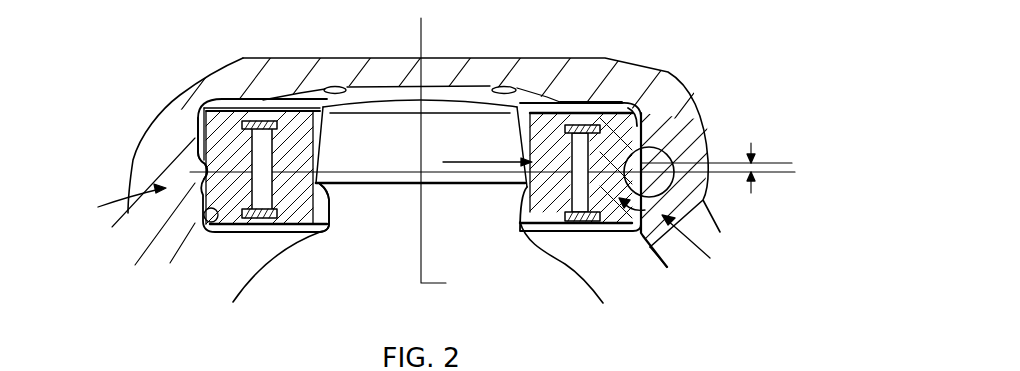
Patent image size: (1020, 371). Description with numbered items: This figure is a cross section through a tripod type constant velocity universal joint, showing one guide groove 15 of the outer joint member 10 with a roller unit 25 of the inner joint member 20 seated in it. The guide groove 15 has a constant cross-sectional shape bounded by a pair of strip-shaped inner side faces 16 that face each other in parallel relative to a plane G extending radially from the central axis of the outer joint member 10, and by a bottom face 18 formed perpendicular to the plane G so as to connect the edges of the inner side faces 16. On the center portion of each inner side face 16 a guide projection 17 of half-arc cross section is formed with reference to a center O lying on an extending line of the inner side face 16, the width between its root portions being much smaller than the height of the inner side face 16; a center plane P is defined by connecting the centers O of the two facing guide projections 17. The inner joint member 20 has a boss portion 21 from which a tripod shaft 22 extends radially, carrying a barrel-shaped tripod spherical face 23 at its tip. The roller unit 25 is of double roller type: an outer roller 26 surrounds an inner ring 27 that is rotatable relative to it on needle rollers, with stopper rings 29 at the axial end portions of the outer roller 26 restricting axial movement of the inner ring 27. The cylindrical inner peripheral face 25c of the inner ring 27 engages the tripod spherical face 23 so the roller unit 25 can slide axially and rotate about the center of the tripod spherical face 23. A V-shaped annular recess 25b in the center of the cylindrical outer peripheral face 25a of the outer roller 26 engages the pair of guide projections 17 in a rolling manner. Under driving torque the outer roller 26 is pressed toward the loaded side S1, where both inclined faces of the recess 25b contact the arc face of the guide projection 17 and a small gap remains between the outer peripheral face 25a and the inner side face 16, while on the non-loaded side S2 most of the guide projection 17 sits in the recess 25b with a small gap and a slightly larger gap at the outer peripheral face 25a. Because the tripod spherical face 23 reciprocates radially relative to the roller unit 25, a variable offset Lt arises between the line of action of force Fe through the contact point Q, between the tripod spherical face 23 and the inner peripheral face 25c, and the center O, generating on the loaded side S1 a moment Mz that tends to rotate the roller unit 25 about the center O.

The outer joint member 10 is at (708, 140).
The guide groove 15 is at (350, 90).
The inner side face 16 is at (210, 226).
The guide projection 17 is at (708, 114).
The bottom face 18 is at (520, 112).
The inner joint member 20 is at (612, 294).
The boss portion 21 is at (560, 268).
The tripod shaft 22 is at (470, 123).
The tripod spherical face 23 is at (535, 107).
The roller unit 25 is at (626, 99).
The outer peripheral face 25a is at (199, 135).
The recess 25b is at (197, 172).
The inner peripheral face 25c is at (327, 202).
The outer roller 26 is at (197, 133).
The inner ring 27 is at (293, 138).
The stopper ring 29 is at (263, 123).
The center O is at (705, 202).
The plane G is at (444, 157).
The variable offset Lt is at (717, 168).
The force Fe is at (478, 160).
The center plane P is at (364, 172).
The contact point Q is at (526, 170).
The moment Mz is at (623, 198).
The loaded side S1 is at (703, 247).
The non-loaded side S2 is at (116, 215).